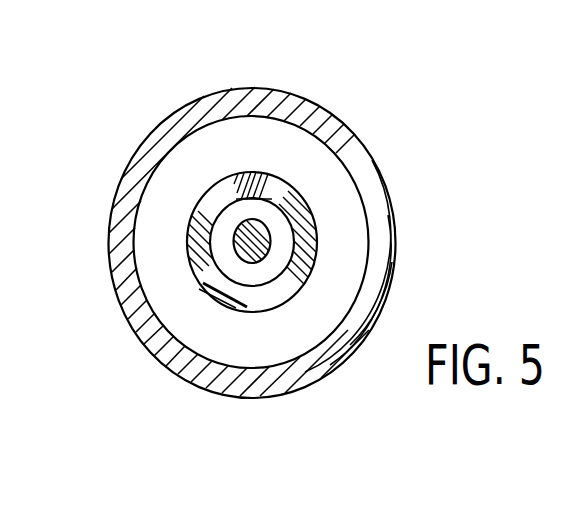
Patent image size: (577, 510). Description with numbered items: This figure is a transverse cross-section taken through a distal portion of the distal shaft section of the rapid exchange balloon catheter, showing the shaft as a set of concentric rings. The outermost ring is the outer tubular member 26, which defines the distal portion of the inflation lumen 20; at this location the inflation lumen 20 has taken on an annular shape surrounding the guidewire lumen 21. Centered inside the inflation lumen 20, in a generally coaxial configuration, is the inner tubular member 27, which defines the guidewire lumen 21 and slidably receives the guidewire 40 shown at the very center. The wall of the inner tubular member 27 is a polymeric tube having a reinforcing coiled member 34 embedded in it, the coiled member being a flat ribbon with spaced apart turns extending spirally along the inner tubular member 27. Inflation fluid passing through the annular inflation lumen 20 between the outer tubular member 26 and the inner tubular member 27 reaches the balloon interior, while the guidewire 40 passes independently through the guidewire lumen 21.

The inflation lumen 20 is at (272, 352).
The guidewire receiving lumen 21 is at (280, 222).
The outer tubular member 26 is at (376, 279).
The inner tubular member 27 is at (207, 194).
The reinforcing coiled member 34 is at (259, 186).
The guidewire 40 is at (233, 231).